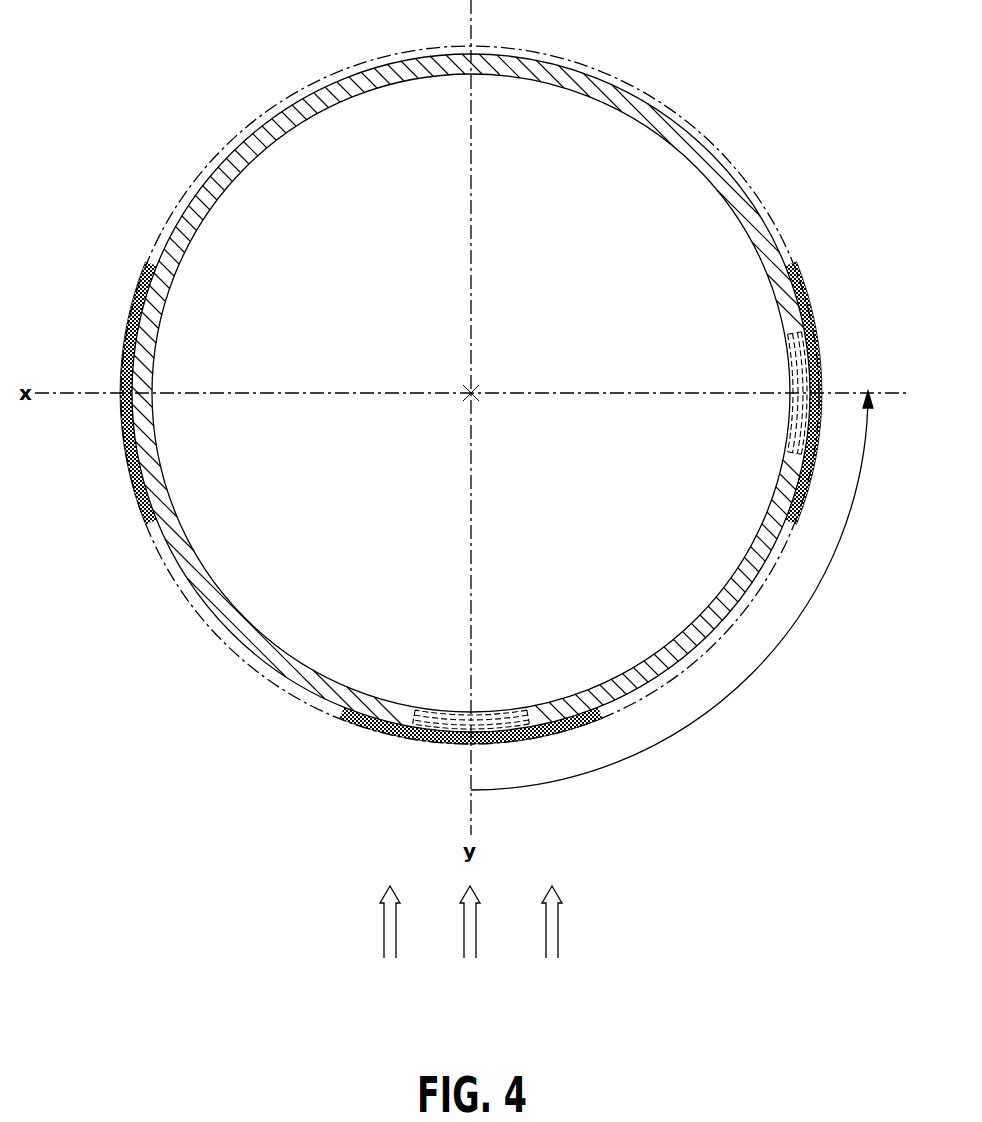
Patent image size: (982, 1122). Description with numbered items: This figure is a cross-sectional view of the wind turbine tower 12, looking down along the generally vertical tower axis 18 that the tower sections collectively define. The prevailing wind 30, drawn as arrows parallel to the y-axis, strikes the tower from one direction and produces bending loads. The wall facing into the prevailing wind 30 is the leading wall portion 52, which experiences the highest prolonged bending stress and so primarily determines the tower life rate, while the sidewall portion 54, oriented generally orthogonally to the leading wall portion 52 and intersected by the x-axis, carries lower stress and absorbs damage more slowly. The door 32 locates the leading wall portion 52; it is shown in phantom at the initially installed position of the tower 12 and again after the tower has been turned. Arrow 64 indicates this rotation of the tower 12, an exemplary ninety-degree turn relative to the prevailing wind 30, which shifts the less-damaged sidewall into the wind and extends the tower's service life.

The tower 12 is at (293, 104).
The tower axis 18 is at (473, 392).
The prevailing wind 30 is at (384, 920).
The door 32 is at (812, 375).
The leading wall portion 52 is at (385, 735).
The sidewall portion 54 is at (812, 302).
The arrow 64 is at (721, 700).